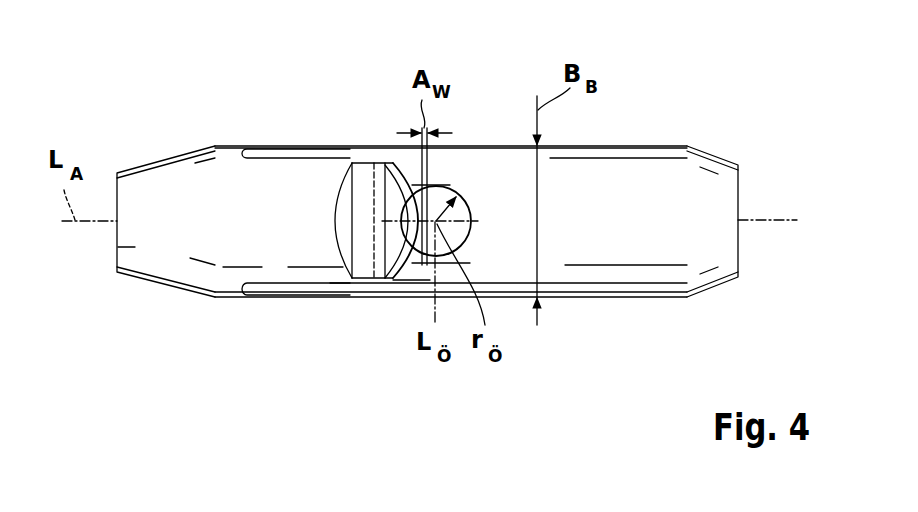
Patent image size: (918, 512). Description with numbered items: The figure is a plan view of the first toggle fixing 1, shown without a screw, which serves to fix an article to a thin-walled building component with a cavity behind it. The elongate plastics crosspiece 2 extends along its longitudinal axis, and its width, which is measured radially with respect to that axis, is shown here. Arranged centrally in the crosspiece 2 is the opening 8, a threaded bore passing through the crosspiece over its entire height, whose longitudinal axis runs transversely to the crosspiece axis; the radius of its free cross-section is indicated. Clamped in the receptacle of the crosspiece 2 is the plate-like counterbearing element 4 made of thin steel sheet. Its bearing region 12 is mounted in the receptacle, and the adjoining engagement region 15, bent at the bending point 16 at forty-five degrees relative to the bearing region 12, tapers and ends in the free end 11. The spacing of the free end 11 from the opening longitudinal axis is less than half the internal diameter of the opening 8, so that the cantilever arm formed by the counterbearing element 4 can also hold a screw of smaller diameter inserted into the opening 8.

The toggle fixing 1 is at (745, 114).
The crosspiece 2 is at (308, 175).
The counterbearing element 4 is at (367, 183).
The opening 8 is at (430, 190).
The free end 11 is at (413, 213).
The bearing region 12 is at (358, 255).
The engagement region 15 is at (405, 245).
The bending point 16 is at (380, 258).